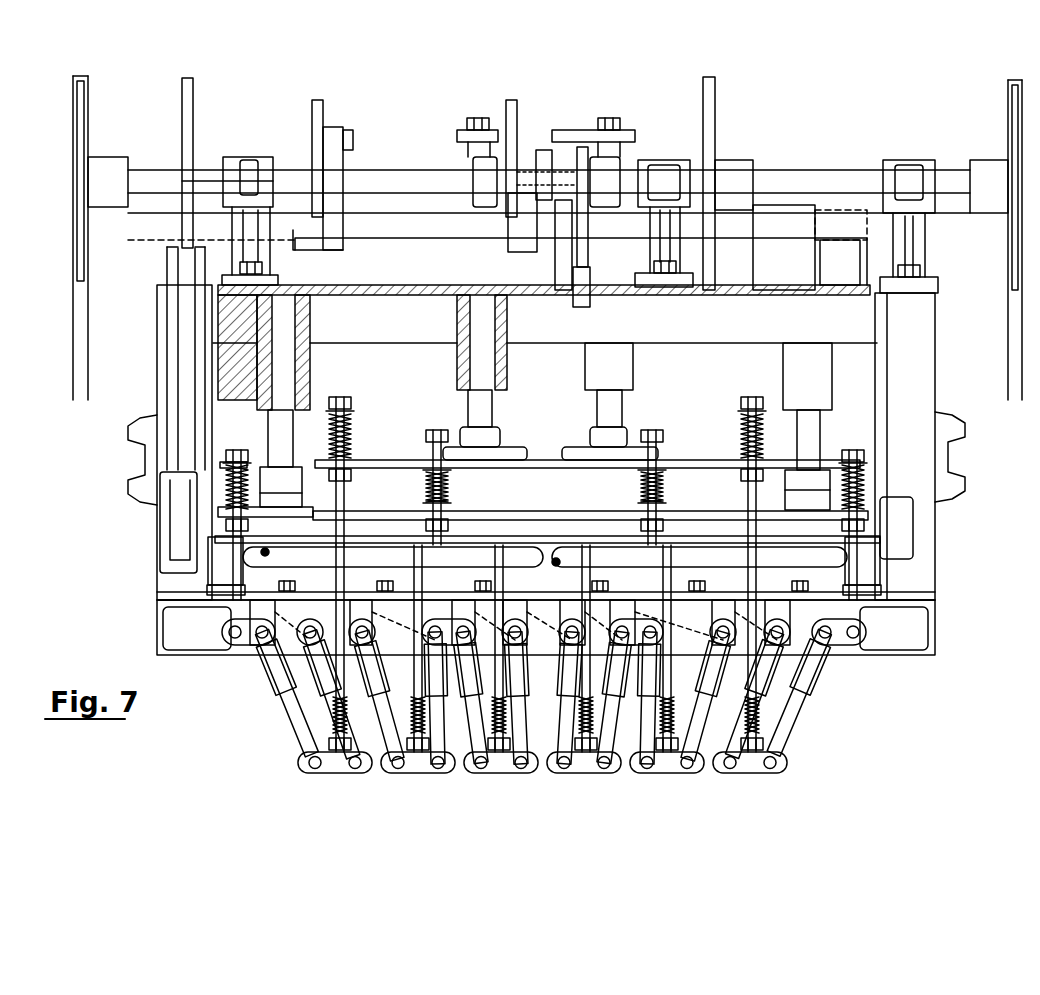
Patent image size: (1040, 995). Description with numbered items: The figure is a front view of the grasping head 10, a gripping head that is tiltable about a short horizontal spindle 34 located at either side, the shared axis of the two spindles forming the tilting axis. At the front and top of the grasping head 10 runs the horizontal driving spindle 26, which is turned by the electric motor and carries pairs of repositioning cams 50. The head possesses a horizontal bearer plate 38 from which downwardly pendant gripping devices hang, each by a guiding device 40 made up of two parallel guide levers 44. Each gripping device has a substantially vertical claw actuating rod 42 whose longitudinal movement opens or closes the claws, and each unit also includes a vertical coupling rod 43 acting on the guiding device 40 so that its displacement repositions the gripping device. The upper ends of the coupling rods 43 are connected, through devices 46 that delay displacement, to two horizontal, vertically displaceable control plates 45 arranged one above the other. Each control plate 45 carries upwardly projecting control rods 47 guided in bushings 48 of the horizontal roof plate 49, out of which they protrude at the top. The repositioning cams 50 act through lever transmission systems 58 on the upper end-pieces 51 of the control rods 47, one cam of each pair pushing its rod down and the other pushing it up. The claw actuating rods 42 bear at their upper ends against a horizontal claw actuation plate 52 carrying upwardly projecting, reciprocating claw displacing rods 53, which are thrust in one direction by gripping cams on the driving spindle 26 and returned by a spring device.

The grasping head 10 is at (153, 522).
The driving spindle 26 is at (405, 228).
The horizontal spindle 34 is at (132, 450).
The bearer plate 38 is at (522, 598).
The guiding device 40 is at (283, 722).
The claw actuating rod 42 is at (346, 567).
The coupling rod 43 is at (655, 530).
The guide levers 44 is at (327, 678).
The control plates 45 is at (545, 462).
The delay devices 46 is at (452, 490).
The control rods 47 is at (612, 410).
The bushings 48 is at (622, 376).
The roof plate 49 is at (390, 292).
The repositioning cams 50 is at (320, 108).
The upper end-pieces 51 is at (465, 125).
The claw actuation plate 52 is at (452, 541).
The claw displacing rods 53 is at (186, 440).
The lever transmission system 58 is at (344, 181).